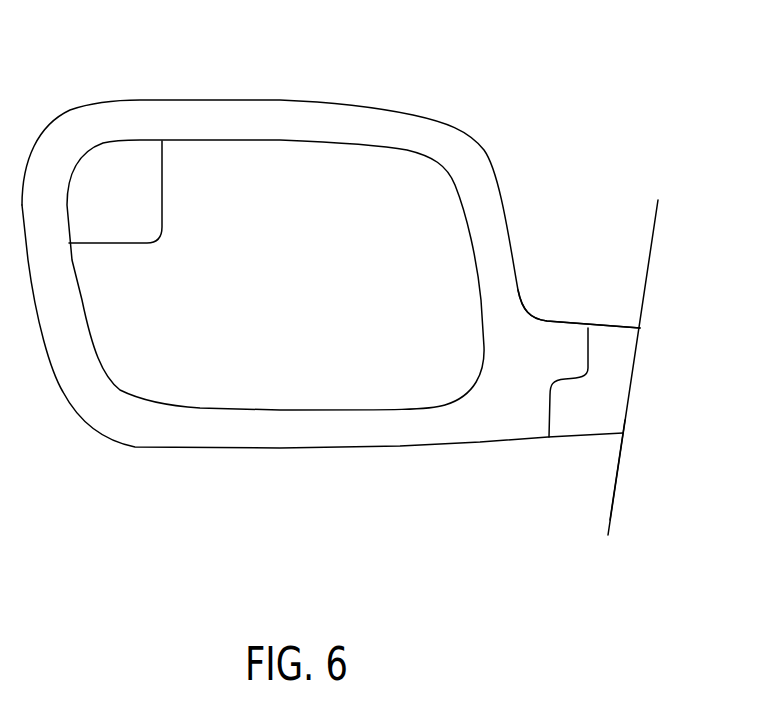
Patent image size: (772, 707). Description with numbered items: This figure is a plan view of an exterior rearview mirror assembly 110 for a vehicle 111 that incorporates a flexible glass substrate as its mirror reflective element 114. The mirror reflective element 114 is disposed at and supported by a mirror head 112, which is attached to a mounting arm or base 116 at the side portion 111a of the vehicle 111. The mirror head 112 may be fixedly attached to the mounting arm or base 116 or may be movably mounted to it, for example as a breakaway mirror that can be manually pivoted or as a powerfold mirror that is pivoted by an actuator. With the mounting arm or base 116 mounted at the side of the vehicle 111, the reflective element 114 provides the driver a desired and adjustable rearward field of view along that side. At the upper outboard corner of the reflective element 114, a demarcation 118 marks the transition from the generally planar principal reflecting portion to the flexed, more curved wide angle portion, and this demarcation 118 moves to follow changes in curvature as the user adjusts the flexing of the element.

The exterior rearview mirror assembly 110 is at (379, 281).
The vehicle 111 is at (666, 368).
The side portion of the vehicle 111a is at (610, 505).
The mirror head 112 is at (195, 442).
The mirror reflective element 114 is at (345, 362).
The mounting arm or base 116 is at (615, 338).
The demarcation 118 is at (163, 188).